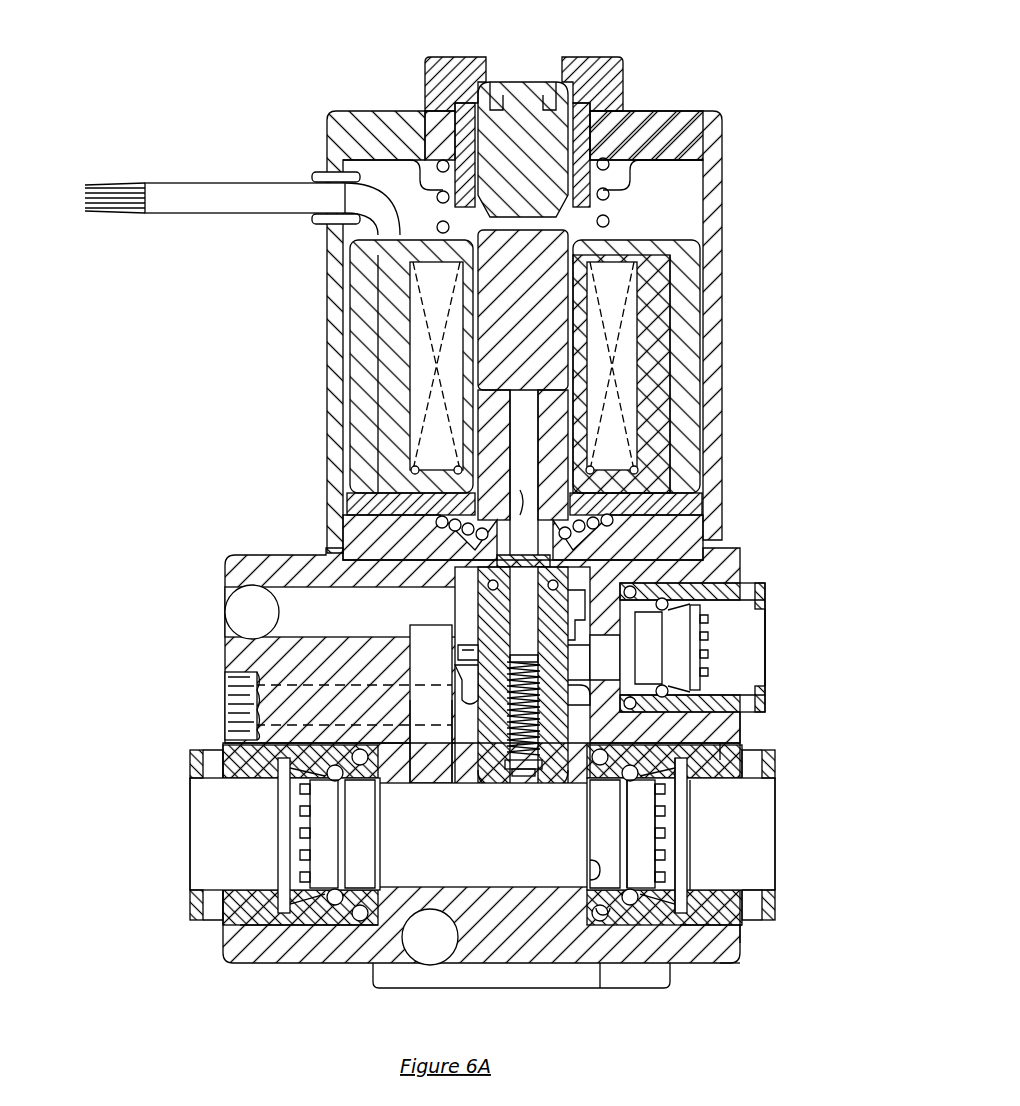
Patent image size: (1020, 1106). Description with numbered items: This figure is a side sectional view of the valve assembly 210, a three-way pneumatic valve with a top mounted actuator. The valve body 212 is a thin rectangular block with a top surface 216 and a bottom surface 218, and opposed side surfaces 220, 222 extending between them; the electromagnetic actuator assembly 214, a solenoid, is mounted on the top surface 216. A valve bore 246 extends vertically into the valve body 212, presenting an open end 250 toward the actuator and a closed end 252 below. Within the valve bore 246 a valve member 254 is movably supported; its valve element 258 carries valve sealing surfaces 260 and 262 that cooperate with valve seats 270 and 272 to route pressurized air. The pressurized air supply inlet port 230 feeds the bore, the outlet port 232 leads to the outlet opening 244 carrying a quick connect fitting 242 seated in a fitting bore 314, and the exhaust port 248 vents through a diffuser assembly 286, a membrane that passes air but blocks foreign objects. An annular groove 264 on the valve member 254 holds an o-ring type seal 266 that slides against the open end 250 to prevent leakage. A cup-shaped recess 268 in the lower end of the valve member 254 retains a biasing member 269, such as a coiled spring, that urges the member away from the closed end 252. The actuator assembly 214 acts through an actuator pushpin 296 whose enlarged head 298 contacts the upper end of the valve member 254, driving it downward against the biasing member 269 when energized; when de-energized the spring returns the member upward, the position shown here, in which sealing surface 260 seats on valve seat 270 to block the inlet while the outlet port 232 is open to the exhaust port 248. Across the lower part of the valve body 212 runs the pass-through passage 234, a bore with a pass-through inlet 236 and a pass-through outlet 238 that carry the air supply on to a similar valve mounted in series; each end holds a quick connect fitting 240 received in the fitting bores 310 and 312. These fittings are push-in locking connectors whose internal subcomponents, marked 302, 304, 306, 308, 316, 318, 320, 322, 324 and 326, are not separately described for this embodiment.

The valve assembly 210 is at (276, 331).
The electromagnetic actuator assembly 214 is at (326, 411).
The top surface 216 is at (348, 485).
The valve body 212 is at (323, 507).
The actuator pushpin 296 is at (536, 446).
The enlarged head 298 is at (525, 472).
The open end 250 is at (590, 538).
The annular groove 264 is at (556, 577).
The o-ring type seal 266 is at (560, 590).
The valve member 254 is at (490, 602).
The valve bore 246 is at (482, 620).
The side surface 220 is at (225, 650).
The valve seat 270 is at (460, 647).
The valve seat 272 is at (460, 671).
The exhaust port 248 is at (440, 714).
The diffuser assembly 286 is at (225, 707).
The valve sealing surface 260 is at (568, 630).
The outlet port 232 is at (612, 658).
The valve element 258 is at (585, 667).
The valve sealing surface 262 is at (567, 698).
The outlet opening 244 is at (746, 636).
The quick connect fitting 242 is at (775, 652).
The fitting bore 314 is at (740, 735).
The body portion 306 is at (722, 758).
The pressurized air supply inlet port 230 is at (440, 772).
The quick connect fitting 240 is at (185, 788).
The pass-through outlet 238 is at (246, 816).
The pass-through inlet 236 is at (740, 812).
The pass-through passage 234 is at (460, 868).
The closed end 252 is at (498, 780).
The cup-shaped recess 268 is at (527, 770).
The biasing member 269 is at (548, 772).
The passage 326 is at (588, 862).
The collet 304 is at (680, 822).
The sleeve 308 is at (630, 890).
The gripping fingers 324 is at (670, 882).
The release ring 322 is at (685, 894).
The retainer 320 is at (740, 895).
The fitting bore 310 is at (743, 924).
The side surface 222 is at (738, 959).
The fitting bore 312 is at (293, 925).
The bottom surface 218 is at (335, 963).
The O-ring 316 is at (598, 923).
The base 318 is at (594, 925).
The insert 302 is at (690, 925).